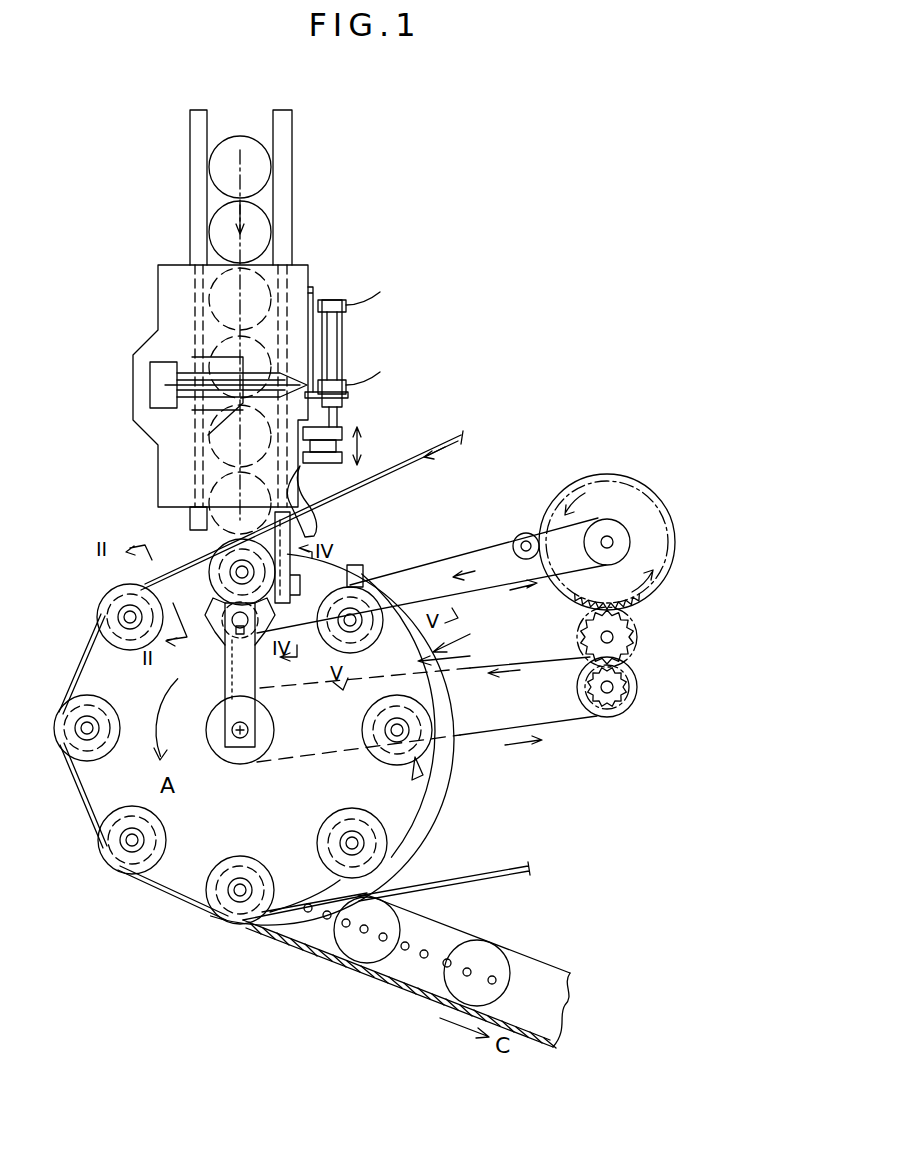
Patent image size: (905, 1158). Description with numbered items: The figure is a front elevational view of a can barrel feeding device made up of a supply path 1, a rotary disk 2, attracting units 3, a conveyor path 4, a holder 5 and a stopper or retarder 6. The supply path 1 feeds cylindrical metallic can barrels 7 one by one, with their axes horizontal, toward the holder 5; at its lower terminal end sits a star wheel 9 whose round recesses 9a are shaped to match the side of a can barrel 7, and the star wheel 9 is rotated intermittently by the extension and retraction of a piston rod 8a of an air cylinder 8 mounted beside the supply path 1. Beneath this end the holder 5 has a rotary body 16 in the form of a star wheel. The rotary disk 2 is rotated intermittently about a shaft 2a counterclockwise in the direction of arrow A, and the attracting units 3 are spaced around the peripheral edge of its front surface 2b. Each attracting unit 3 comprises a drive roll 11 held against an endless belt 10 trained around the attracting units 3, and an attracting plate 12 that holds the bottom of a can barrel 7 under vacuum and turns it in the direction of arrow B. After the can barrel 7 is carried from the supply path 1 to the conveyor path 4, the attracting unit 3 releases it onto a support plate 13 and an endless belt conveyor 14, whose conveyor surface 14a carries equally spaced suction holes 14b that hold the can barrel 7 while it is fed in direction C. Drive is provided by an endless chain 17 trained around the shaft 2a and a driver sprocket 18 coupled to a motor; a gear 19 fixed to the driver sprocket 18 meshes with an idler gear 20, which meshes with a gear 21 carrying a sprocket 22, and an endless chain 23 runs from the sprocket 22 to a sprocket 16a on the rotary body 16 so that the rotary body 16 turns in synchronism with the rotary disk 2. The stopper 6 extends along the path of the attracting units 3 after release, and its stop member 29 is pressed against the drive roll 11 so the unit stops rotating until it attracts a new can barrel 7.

The supply path 1 is at (313, 168).
The rotary disk 2 is at (430, 801).
The shaft 2a is at (240, 760).
The front surface 2b is at (382, 810).
The attracting units 3 is at (225, 576).
The conveyor path 4 is at (499, 925).
The holder 5 is at (184, 685).
The stopper 6 is at (468, 633).
The can barrels 7 is at (217, 163).
The air cylinder 8 is at (343, 352).
The piston rod 8a is at (343, 416).
The star wheel 9 is at (330, 516).
The round recesses 9a is at (305, 468).
The endless belt 10 is at (440, 437).
The drive roll 11 is at (55, 716).
The attracting plate 12 is at (128, 776).
The support plate 13 is at (272, 940).
The endless belt conveyor 14 is at (564, 966).
The conveyor surface 14a is at (555, 988).
The suction holes 14b is at (424, 950).
The rotary body 16 is at (224, 650).
The sprocket 16a is at (226, 632).
The endless chain 17 is at (475, 740).
The driver sprocket 18 is at (590, 710).
The gear 19 is at (614, 692).
The idler gear 20 is at (580, 628).
The gear 21 is at (600, 490).
The sprocket 22 is at (612, 526).
The endless chain 23 is at (428, 565).
The stop member 29 is at (446, 658).